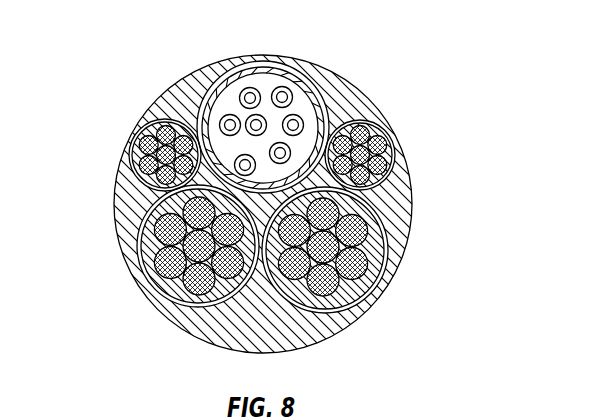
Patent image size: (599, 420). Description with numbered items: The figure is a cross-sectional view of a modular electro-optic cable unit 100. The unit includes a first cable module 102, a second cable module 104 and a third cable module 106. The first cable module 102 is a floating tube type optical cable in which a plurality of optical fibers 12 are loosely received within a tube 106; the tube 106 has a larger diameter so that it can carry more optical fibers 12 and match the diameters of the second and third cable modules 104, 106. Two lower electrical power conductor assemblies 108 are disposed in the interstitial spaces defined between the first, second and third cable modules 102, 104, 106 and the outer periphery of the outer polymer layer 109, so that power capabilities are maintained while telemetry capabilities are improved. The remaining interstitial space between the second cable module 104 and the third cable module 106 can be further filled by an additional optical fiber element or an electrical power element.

The modular electro-optic cable unit 100 is at (372, 69).
The optical fibers 12 is at (250, 87).
The first cable module 102 is at (288, 72).
The second cable module 104 is at (138, 248).
The third cable module 106 is at (212, 78).
The lower electrical power conductor assemblies 108 is at (133, 157).
The outer polymer layer 109 is at (200, 321).